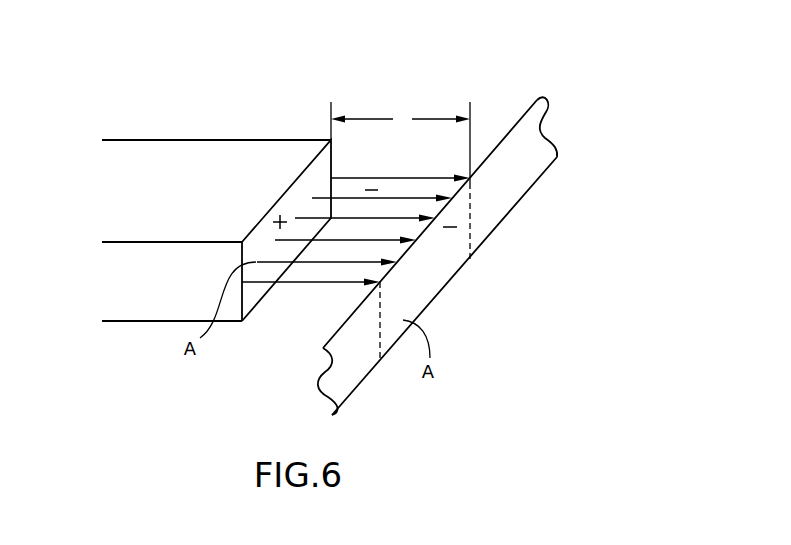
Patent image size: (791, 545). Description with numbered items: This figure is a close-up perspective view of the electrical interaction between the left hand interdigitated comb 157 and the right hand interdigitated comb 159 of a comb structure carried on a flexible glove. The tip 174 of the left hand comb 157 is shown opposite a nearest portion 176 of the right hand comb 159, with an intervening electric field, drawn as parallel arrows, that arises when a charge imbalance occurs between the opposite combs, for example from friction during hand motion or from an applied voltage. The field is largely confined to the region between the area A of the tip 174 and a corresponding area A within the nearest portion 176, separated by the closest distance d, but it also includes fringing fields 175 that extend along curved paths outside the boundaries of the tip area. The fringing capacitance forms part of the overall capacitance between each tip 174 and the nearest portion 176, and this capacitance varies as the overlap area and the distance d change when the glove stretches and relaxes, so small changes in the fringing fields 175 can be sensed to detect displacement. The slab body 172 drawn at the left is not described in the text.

The left hand interdigitated comb 157 is at (291, 89).
The right hand interdigitated comb 159 is at (563, 100).
The dielectric slab 172 is at (188, 200).
The tip 174 is at (288, 188).
The fringing fields 175 is at (323, 160).
The nearest portion 176 is at (457, 262).